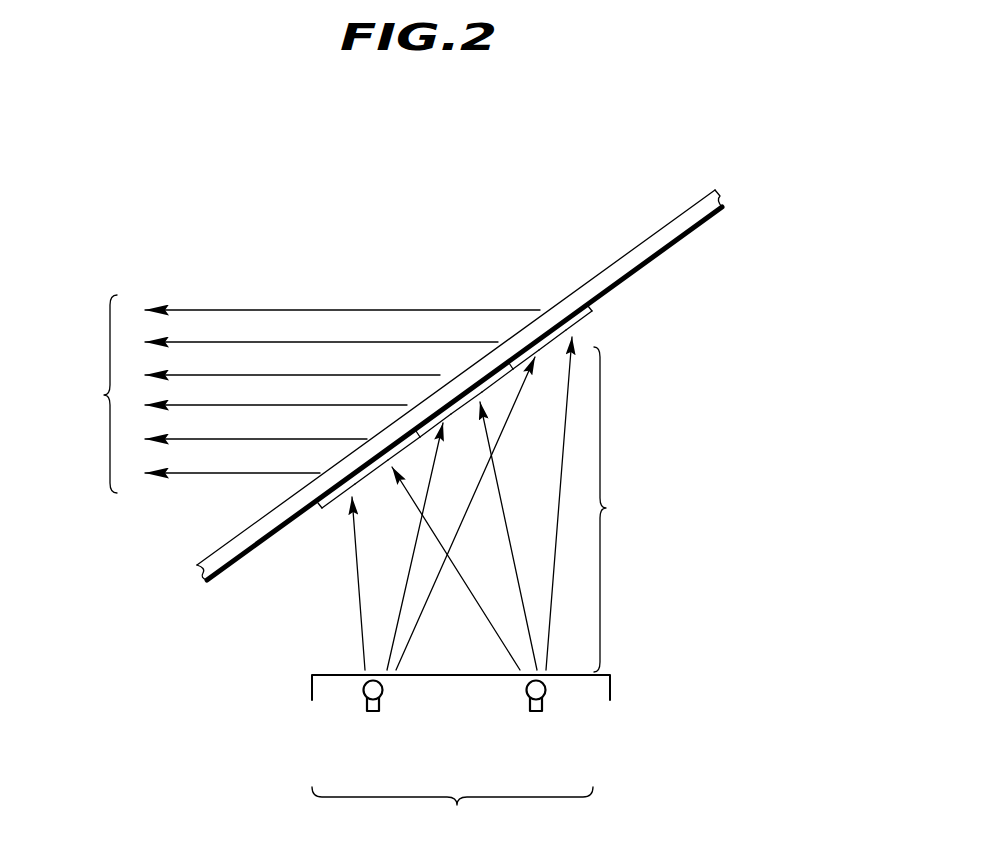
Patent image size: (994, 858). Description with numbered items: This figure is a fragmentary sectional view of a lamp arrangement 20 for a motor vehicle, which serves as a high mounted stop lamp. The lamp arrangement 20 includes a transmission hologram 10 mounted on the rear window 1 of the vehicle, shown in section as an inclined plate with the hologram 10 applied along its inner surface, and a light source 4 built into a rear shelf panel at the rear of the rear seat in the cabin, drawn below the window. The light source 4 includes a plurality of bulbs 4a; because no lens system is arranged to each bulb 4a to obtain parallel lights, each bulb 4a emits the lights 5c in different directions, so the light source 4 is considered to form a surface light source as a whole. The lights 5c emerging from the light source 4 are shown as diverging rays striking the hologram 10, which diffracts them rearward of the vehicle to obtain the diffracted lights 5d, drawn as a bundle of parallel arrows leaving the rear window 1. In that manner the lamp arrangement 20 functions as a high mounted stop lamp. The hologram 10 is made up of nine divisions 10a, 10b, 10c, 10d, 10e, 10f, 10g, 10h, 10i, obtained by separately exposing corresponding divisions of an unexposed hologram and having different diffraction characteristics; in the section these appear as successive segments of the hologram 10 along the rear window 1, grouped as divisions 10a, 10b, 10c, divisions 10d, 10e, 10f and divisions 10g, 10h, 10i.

The rear window 1 is at (689, 208).
The transmission hologram 10 is at (597, 308).
The division 10a is at (388, 458).
The division 10b is at (371, 472).
The division 10c is at (404, 448).
The division 10d is at (462, 395).
The division 10e is at (466, 403).
The division 10f is at (497, 380).
The division 10g is at (553, 335).
The division 10h is at (552, 340).
The division 10i is at (579, 320).
The lamp arrangement 20 is at (695, 505).
The diffracted lights 5d is at (295, 394).
The lights 5c is at (504, 504).
The light source 4 is at (456, 759).
The bulb 4a is at (366, 704).